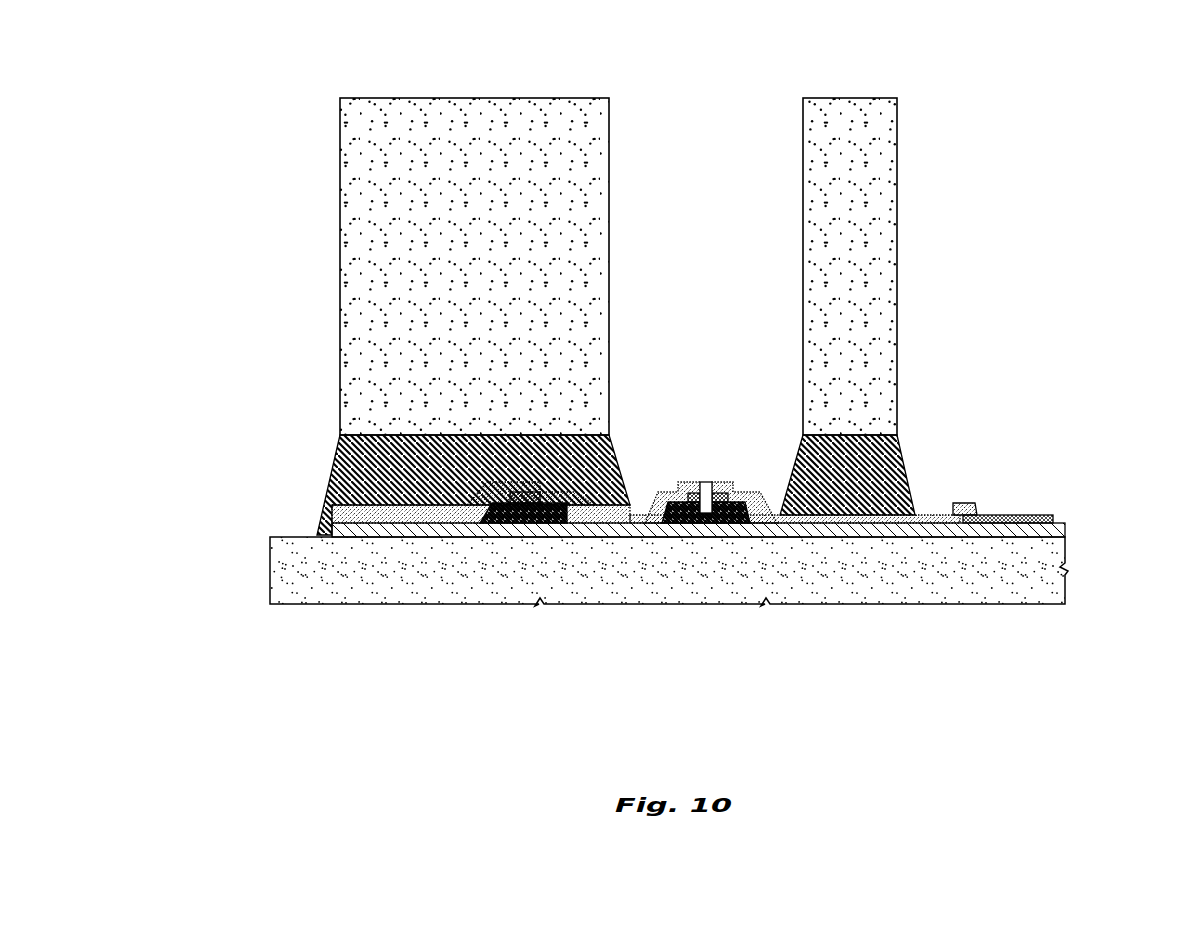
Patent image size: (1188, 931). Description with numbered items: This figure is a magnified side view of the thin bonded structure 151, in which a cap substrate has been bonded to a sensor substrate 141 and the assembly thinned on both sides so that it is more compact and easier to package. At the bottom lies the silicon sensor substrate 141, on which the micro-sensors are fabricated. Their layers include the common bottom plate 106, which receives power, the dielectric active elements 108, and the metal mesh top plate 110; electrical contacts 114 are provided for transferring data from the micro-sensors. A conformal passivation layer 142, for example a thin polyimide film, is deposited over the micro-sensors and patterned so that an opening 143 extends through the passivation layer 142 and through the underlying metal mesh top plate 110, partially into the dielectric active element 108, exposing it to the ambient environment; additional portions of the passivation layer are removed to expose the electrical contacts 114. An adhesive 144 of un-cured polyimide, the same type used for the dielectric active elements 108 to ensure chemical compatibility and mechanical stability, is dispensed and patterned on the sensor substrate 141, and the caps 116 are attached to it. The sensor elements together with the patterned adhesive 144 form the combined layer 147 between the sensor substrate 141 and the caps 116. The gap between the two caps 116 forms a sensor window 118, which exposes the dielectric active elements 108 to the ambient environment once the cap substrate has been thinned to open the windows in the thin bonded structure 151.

The common bottom plate 106 is at (1060, 527).
The dielectric active element 108 is at (743, 503).
The metal mesh top plate 110 is at (718, 492).
The electrical contact 114 is at (1040, 517).
The cap 116 is at (605, 243).
The sensor window 118 is at (685, 165).
The sensor substrate 141 is at (1038, 594).
The conformal passivation layer 142 is at (658, 492).
The opening 143 is at (705, 480).
The adhesive 144 is at (603, 455).
The combined layer 147 is at (300, 532).
The thin bonded structure 151 is at (1128, 728).